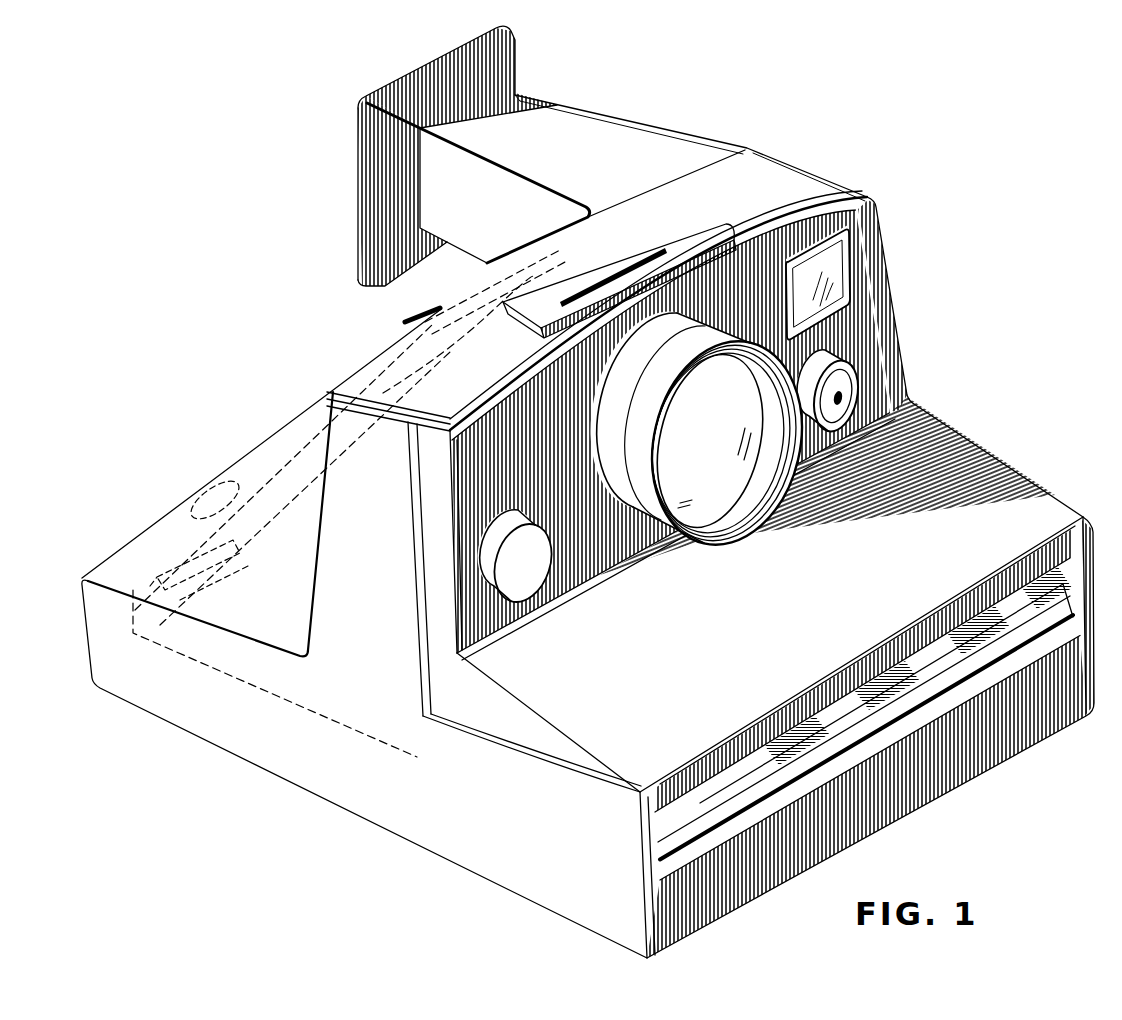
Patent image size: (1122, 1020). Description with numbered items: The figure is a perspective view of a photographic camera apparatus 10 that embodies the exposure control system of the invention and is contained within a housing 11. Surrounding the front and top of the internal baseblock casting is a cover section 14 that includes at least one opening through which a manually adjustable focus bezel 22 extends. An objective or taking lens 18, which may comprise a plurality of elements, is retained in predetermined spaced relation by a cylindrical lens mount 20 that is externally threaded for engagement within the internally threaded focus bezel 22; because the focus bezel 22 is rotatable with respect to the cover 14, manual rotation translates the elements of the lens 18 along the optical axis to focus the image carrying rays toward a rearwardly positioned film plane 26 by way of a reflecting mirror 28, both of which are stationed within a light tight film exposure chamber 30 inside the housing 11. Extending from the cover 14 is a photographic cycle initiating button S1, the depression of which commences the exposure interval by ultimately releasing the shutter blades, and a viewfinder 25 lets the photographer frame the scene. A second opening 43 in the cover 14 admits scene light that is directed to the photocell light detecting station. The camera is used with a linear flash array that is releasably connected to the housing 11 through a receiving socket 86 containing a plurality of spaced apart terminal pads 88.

The photographic camera apparatus 10 is at (588, 492).
The housing 11 is at (887, 340).
The cover section 14 is at (1032, 498).
The objective lens 18 is at (696, 431).
The cylindrical lens mount 20 is at (758, 388).
The focus bezel 22 is at (641, 435).
The viewfinder 25 is at (841, 252).
The film plane 26 is at (273, 584).
The reflecting mirror 28 is at (188, 513).
The film exposure chamber 30 is at (238, 540).
The second opening 43 is at (840, 398).
The receiving socket 86 is at (619, 281).
The terminal pads 88 is at (576, 293).
The photographic cycle initiating button S1 is at (556, 595).